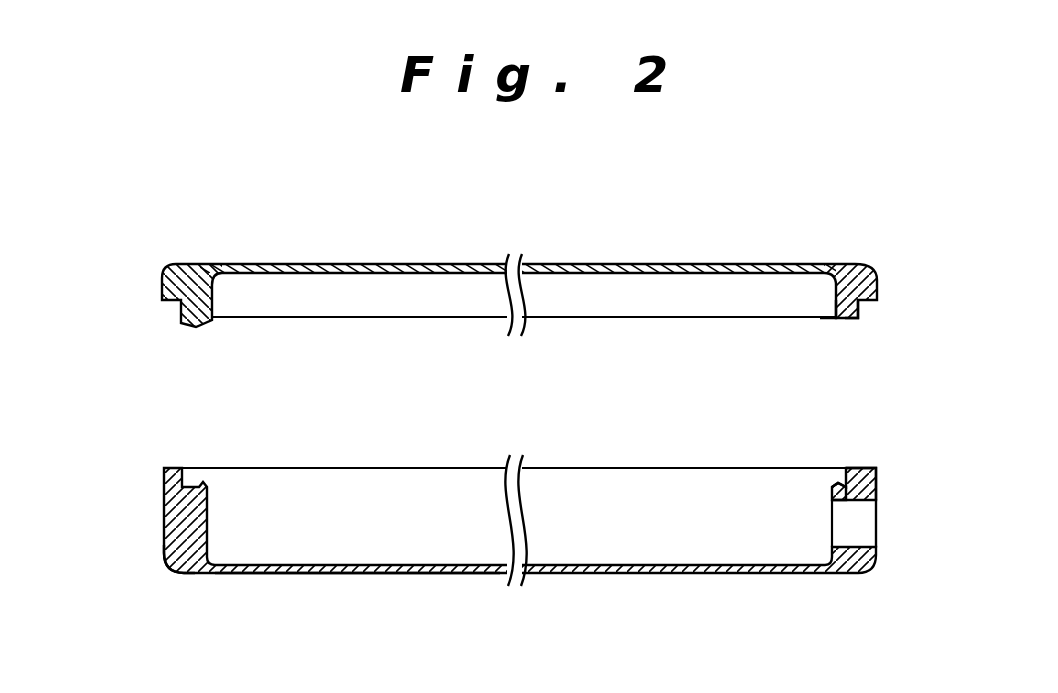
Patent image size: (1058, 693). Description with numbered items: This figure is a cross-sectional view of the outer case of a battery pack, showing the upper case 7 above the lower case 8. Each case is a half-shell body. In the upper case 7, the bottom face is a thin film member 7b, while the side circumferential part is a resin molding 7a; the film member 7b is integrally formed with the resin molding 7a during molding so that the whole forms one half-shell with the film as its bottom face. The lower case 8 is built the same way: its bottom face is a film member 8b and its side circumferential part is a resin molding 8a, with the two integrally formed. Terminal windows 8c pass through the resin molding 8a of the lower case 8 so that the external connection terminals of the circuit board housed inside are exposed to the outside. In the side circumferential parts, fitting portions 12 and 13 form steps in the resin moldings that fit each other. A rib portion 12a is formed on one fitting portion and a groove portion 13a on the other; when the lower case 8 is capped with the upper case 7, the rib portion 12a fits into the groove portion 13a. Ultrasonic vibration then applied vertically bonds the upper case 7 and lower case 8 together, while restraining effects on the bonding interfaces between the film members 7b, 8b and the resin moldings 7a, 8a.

The upper case 7 is at (510, 301).
The resin molding 7a is at (874, 274).
The film member 7b is at (689, 265).
The fitting portion 12 is at (835, 319).
The rib portion 12a is at (846, 323).
The lower case 8 is at (507, 540).
The resin molding 8a is at (165, 543).
The film member 8b is at (348, 576).
The terminal window 8c is at (862, 535).
The fitting portion 13 is at (854, 478).
The groove portion 13a is at (843, 485).